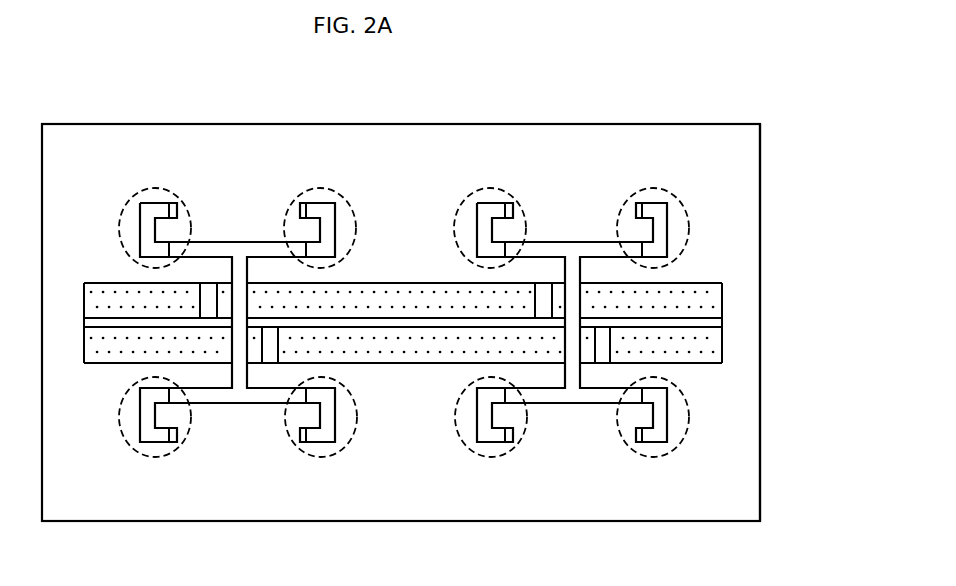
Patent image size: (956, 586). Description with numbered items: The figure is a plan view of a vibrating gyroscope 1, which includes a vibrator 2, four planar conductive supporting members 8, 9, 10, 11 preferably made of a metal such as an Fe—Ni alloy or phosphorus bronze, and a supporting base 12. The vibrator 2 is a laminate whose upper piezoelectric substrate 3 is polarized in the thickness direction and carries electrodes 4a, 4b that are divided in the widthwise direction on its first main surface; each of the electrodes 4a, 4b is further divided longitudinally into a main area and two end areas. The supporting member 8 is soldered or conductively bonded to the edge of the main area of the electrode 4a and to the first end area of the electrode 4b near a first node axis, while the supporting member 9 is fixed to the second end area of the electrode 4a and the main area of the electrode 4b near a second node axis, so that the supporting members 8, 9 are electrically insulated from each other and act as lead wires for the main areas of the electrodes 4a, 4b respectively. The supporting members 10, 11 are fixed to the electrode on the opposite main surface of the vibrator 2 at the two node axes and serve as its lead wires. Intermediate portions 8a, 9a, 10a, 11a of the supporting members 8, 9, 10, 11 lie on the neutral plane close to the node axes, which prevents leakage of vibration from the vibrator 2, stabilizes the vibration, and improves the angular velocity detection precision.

The vibrating gyroscope 1 is at (68, 118).
The vibrator 2 is at (708, 273).
The piezoelectric substrate 3 is at (722, 323).
The electrode 4a is at (707, 305).
The electrode 4b is at (708, 342).
The supporting member 8 is at (223, 242).
The intermediate portion 8a is at (155, 188).
The supporting member 9 is at (590, 242).
The intermediate portion 9a is at (648, 188).
The supporting member 10 is at (260, 242).
The intermediate portion 10a is at (325, 188).
The supporting member 11 is at (545, 242).
The intermediate portion 11a is at (481, 188).
The supporting base 12 is at (725, 140).